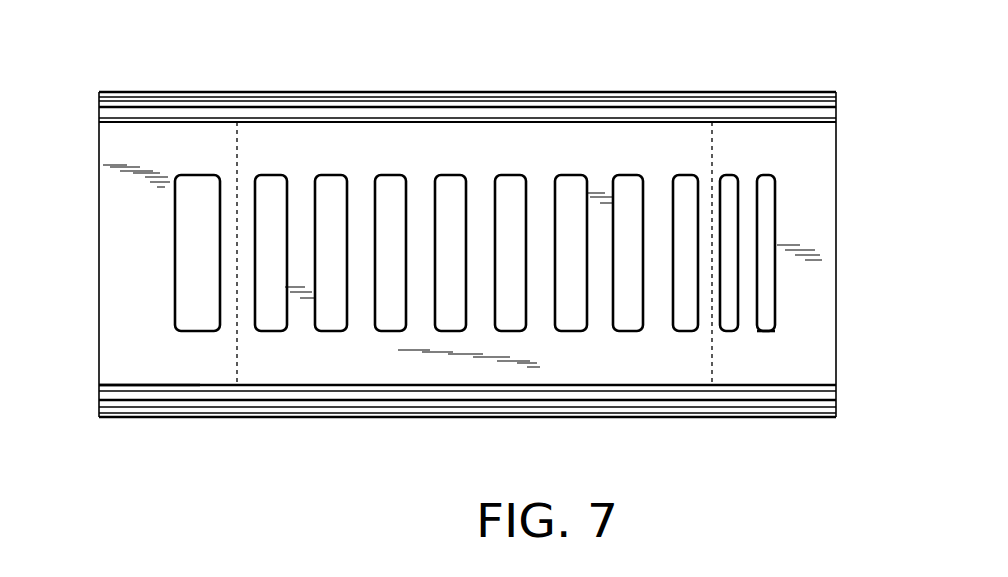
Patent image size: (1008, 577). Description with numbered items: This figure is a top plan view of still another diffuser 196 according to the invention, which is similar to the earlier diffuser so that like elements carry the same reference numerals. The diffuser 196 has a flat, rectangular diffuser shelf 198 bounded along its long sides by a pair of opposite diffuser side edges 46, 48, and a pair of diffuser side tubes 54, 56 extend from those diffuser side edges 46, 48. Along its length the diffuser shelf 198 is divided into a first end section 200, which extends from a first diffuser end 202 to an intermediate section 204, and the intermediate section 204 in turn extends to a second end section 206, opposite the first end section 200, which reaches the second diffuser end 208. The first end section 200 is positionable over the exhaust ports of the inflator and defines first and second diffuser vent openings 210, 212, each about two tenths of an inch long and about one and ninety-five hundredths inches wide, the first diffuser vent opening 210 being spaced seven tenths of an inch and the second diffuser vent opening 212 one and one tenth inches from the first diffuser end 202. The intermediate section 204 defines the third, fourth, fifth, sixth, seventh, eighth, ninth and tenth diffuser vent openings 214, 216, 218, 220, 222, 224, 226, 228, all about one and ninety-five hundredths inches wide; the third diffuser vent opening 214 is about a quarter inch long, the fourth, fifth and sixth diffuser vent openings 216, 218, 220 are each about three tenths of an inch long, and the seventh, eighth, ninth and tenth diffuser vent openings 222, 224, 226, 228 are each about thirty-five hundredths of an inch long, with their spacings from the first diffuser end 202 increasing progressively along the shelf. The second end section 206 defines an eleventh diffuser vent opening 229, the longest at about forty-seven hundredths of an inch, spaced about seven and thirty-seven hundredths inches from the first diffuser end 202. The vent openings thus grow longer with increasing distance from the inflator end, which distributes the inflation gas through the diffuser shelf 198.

The diffuser side edge 46 is at (255, 378).
The diffuser side edge 48 is at (326, 125).
The diffuser side tube 54 is at (277, 412).
The diffuser side tube 56 is at (393, 93).
The diffuser 196 is at (632, 428).
The diffuser shelf 198 is at (567, 363).
The first end section 200 is at (748, 378).
The first diffuser end 202 is at (838, 290).
The intermediate section 204 is at (395, 380).
The second end section 206 is at (155, 378).
The second diffuser end 208 is at (99, 348).
The first diffuser vent opening 210 is at (767, 332).
The second diffuser vent opening 212 is at (727, 176).
The third diffuser vent opening 214 is at (684, 176).
The fourth diffuser vent opening 216 is at (627, 176).
The fifth diffuser vent opening 218 is at (570, 176).
The sixth diffuser vent opening 220 is at (511, 176).
The seventh diffuser vent opening 222 is at (452, 176).
The eighth diffuser vent opening 224 is at (393, 176).
The ninth diffuser vent opening 226 is at (333, 176).
The tenth diffuser vent opening 228 is at (276, 176).
The eleventh diffuser vent opening 229 is at (203, 176).